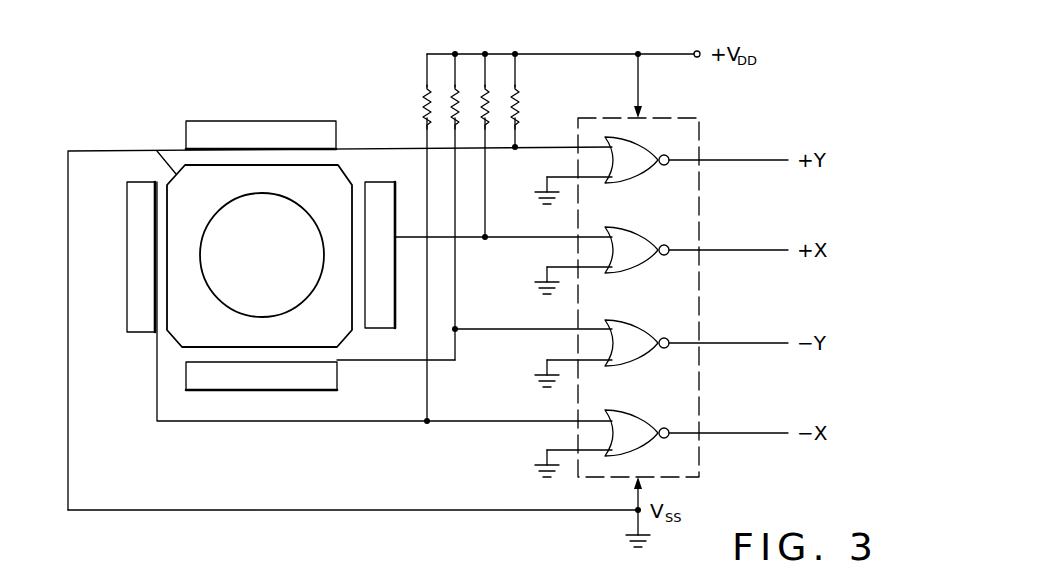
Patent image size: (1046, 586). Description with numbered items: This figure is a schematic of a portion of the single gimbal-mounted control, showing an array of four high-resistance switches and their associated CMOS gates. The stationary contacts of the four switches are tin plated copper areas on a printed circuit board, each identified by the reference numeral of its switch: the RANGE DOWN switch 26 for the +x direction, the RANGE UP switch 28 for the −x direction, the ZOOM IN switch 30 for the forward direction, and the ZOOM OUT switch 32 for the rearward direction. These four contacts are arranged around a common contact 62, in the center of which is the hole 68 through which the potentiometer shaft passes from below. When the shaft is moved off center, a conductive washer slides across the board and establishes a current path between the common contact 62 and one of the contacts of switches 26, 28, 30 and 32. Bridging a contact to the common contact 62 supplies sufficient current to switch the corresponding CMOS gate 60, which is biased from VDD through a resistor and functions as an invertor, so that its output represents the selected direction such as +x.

The RANGE DOWN switch 26 is at (375, 328).
The RANGE UP switch 28 is at (127, 253).
The ZOOM IN switch 30 is at (295, 121).
The ZOOM OUT switch 32 is at (337, 376).
The CMOS integrated circuit gate 60 is at (632, 179).
The common contact 62 is at (213, 333).
The hole 68 is at (320, 252).